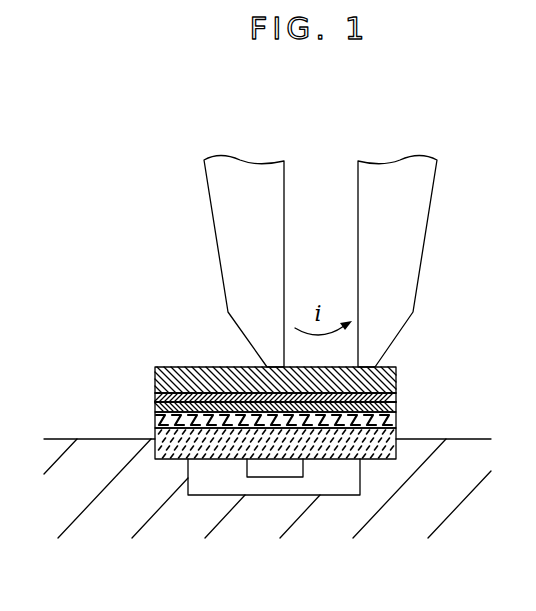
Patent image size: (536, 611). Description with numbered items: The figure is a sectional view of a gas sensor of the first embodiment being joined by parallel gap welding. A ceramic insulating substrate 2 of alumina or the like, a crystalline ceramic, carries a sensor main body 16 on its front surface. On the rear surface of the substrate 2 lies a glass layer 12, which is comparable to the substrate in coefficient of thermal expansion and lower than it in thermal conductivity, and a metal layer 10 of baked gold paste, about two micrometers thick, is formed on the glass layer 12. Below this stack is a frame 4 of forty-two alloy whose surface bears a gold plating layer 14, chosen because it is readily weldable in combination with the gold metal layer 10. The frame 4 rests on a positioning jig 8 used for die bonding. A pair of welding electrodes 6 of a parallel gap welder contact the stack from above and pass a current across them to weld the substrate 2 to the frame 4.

The ceramic insulating substrate 2 is at (383, 437).
The frame 4 is at (385, 380).
The welding electrodes 6 is at (240, 176).
The positioning jig 8 is at (92, 458).
The metal layer 10 is at (397, 403).
The glass layer 12 is at (155, 417).
The gold plating layer 14 is at (192, 395).
The sensor main body 16 is at (275, 475).